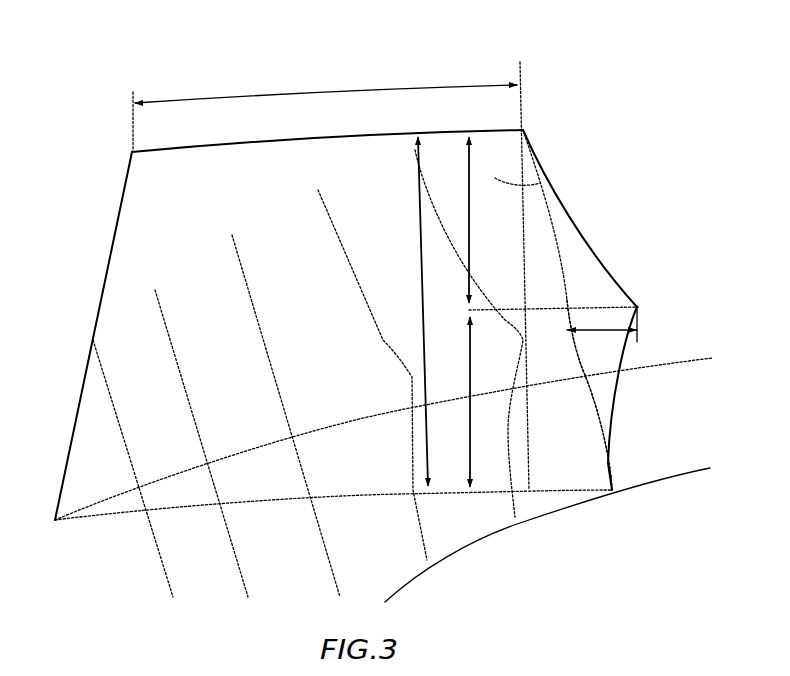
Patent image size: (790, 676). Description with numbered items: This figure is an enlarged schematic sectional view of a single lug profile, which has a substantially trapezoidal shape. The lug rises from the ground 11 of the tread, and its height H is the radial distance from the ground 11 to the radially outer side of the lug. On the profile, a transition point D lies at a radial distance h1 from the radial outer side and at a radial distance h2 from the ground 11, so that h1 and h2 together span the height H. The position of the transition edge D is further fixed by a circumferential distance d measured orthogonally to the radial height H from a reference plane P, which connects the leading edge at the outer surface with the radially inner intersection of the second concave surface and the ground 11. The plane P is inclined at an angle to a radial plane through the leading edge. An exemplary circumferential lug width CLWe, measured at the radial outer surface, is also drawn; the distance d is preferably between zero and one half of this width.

The ground 11 is at (102, 517).
The circumferential lug width CLWe is at (262, 95).
The height of the lug H is at (413, 311).
The radial distance from radial outer side h1 is at (479, 220).
The radial distance from ground h2 is at (479, 402).
The transition point D is at (562, 297).
The circumferential distance d is at (602, 324).
The reference plane P is at (597, 412).